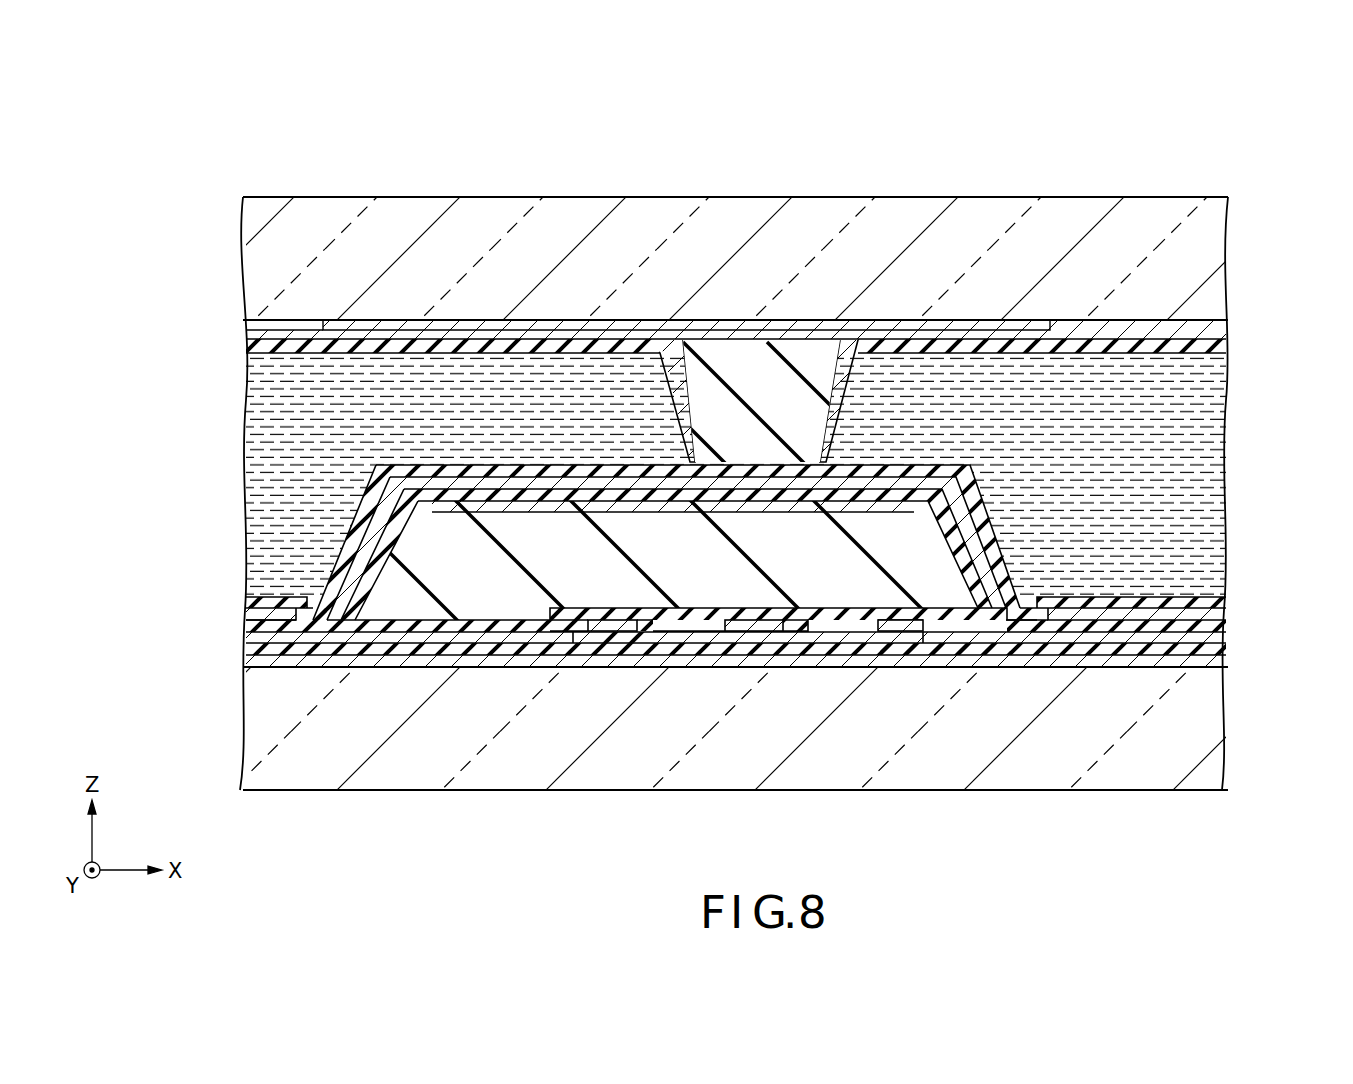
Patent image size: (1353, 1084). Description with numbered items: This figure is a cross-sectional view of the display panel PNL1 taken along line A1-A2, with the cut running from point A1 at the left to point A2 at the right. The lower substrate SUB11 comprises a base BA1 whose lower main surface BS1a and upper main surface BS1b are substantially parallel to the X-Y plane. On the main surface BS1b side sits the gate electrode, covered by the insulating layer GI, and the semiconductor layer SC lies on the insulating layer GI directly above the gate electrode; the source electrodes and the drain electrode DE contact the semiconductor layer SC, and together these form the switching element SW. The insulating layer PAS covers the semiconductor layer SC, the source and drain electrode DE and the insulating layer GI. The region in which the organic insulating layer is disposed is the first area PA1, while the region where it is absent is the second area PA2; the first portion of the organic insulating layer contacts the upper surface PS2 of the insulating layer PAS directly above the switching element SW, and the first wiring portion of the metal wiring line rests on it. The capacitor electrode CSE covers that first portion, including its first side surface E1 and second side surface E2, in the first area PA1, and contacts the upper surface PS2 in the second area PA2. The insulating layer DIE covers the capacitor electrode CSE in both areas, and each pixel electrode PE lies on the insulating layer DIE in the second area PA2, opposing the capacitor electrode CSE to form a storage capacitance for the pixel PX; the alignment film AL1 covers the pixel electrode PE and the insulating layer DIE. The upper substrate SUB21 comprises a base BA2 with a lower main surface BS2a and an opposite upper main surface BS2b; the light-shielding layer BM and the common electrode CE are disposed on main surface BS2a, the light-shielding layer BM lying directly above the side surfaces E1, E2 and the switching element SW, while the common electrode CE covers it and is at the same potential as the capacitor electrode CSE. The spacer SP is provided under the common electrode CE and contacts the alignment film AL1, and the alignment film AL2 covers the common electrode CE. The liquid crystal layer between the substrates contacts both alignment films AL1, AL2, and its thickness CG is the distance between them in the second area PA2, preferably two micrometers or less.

The display panel PNL1 is at (170, 173).
The second area PA2 is at (1227, 93).
The first area PA1 is at (975, 93).
The first side surface E1 is at (380, 535).
The spacer SP is at (728, 356).
The light-shielding layer BM is at (830, 328).
The switching element SW is at (864, 606).
The second side surface E2 is at (990, 582).
The main surface (upper surface) BS2b is at (1065, 194).
The main surface (lower surface) BS2a is at (1148, 330).
The substrate SUB21 is at (696, 258).
The base BA2 is at (1215, 254).
The common electrode CE is at (1213, 330).
The alignment film AL2 is at (1213, 349).
The thickness CG is at (1115, 357).
The alignment film AL1 is at (1210, 598).
The pixel electrode PE is at (262, 607).
The insulating layer DIE is at (1215, 626).
The capacitor electrode CSE is at (1210, 637).
The insulating layer PAS is at (1200, 648).
The insulating layer GI is at (1205, 662).
The base BA1 is at (1215, 735).
The substrate SUB11 is at (698, 728).
The line A1-A2 end point A1 is at (241, 814).
The line A1-A2 end point A2 is at (1220, 814).
The pixel PX is at (267, 676).
The main surface (upper surface) BS1b is at (340, 655).
The main surface (lower surface) BS1a is at (422, 796).
The semiconductor layer SC is at (655, 643).
The drain electrode DE is at (762, 633).
The upper surface PS2 is at (1164, 627).